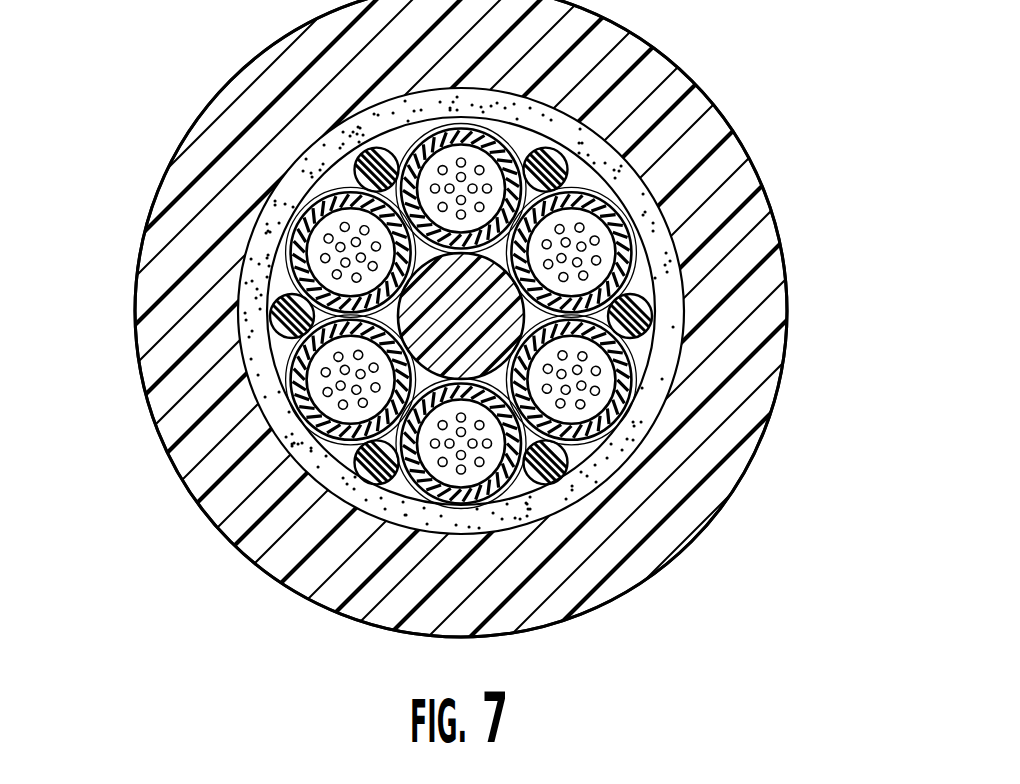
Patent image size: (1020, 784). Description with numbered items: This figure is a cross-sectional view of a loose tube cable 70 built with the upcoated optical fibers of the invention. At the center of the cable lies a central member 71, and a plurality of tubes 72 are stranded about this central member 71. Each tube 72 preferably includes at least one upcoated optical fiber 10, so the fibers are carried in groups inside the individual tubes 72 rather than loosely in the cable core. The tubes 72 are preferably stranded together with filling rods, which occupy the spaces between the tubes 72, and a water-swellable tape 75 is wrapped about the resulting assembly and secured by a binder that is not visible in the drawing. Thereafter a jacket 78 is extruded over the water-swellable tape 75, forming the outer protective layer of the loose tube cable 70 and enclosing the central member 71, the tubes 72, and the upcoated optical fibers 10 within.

The loose tube cable 70 is at (140, 97).
The central member 71 is at (508, 270).
The tubes 72 is at (523, 208).
The water-swellable tape 75 is at (250, 264).
The jacket 78 is at (197, 460).
The upcoated optical fiber 10 is at (585, 404).